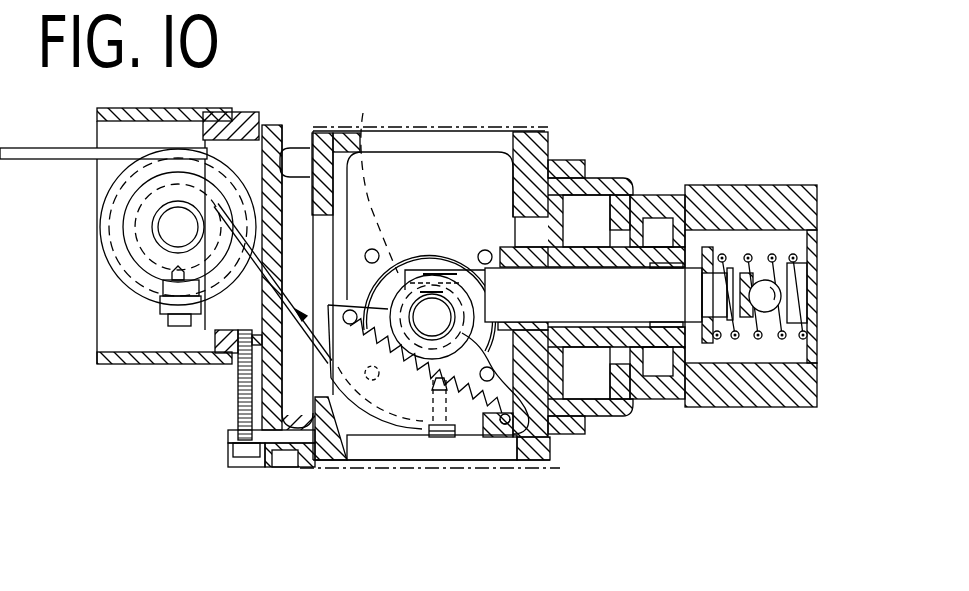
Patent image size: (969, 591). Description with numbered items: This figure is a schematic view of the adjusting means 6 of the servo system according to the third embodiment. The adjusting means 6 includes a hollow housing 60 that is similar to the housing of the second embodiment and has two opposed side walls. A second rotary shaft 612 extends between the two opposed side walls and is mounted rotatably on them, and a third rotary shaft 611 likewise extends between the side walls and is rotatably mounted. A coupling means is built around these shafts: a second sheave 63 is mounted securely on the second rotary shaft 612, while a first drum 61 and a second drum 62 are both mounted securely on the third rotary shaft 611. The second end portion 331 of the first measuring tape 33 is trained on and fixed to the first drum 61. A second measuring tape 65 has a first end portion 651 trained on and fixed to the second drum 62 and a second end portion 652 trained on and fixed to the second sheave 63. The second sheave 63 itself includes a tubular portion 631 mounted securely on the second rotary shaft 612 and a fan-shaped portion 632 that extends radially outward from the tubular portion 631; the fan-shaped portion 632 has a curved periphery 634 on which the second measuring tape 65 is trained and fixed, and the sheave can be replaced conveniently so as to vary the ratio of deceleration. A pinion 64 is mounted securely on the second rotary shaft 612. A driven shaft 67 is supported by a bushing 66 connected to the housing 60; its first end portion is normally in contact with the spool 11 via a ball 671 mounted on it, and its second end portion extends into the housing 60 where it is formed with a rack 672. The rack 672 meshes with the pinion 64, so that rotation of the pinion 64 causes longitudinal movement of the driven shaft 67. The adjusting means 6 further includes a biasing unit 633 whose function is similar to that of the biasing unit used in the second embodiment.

The adjusting means 6 is at (406, 113).
The spool 11 is at (795, 290).
The first measuring tape 33 is at (30, 150).
The second end portion of the first measuring tape 331 is at (160, 285).
The hollow housing 60 is at (513, 131).
The first drum 61 is at (117, 247).
The third rotary shaft 611 is at (178, 227).
The second rotary shaft 612 is at (421, 395).
The second drum 62 is at (160, 257).
The second sheave 63 is at (325, 468).
The tubular portion 631 is at (540, 432).
The fan-shaped portion 632 is at (432, 325).
The biasing unit 633 is at (402, 400).
The curved periphery 634 is at (355, 352).
The pinion 64 is at (363, 117).
The second measuring tape 65 is at (236, 389).
The first end portion of the second measuring tape 651 is at (207, 270).
The second end portion of the second measuring tape 652 is at (458, 432).
The bushing 66 is at (662, 307).
The driven shaft 67 is at (660, 343).
The ball 671 is at (780, 313).
The rack 672 is at (435, 270).